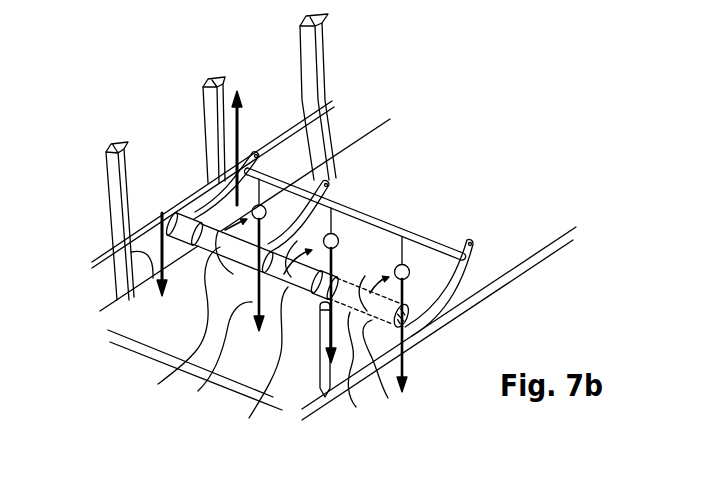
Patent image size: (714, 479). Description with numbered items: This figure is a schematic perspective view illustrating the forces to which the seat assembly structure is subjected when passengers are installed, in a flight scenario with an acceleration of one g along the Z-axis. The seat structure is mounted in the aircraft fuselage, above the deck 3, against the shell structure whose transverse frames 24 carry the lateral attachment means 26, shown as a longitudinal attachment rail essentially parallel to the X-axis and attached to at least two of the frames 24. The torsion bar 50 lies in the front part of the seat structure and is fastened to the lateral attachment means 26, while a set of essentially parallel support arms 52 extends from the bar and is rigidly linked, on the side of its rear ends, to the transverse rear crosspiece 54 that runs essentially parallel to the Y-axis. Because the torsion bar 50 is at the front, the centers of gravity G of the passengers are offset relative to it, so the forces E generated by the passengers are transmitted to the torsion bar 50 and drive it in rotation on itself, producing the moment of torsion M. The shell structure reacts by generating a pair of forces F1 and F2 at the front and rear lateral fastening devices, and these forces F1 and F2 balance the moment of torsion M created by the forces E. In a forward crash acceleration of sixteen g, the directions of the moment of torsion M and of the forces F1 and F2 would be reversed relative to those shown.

The deck 3 is at (534, 225).
The frames 24 is at (110, 186).
The lateral attachment means 26 is at (95, 257).
The torsion bar 50 is at (207, 212).
The support arms 52 is at (458, 303).
The rear crosspiece 54 is at (404, 264).
The centers of gravity G is at (323, 182).
The force F1 is at (110, 286).
The force F2 is at (239, 123).
The forces E is at (429, 366).
The moment of torsion M is at (262, 341).